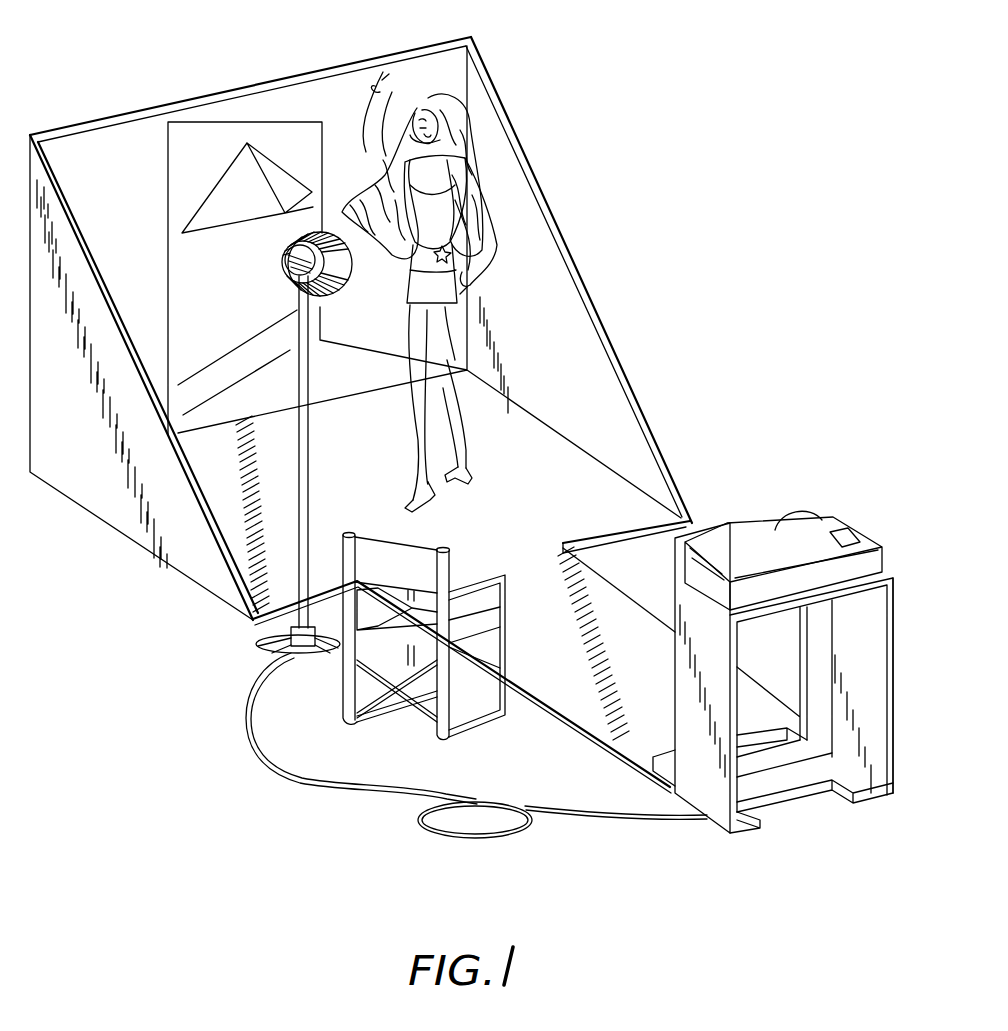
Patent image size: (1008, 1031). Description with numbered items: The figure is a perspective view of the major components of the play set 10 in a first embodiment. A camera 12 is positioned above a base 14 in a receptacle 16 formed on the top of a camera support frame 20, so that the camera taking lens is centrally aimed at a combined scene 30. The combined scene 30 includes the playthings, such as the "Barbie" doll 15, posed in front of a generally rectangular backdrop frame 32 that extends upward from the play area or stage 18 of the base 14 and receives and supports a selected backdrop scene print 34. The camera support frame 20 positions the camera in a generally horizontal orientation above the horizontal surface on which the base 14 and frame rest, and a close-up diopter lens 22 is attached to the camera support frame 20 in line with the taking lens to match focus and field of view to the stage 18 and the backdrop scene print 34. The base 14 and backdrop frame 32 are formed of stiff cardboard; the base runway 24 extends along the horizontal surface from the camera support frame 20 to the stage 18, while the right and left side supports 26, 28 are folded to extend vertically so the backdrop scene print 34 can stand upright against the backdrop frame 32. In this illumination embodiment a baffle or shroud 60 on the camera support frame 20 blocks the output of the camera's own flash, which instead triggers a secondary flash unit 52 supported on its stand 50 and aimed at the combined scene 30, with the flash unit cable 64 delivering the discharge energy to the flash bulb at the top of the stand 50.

The play set 10 is at (292, 788).
The camera 12 is at (838, 522).
The base 14 is at (541, 716).
The doll 15 is at (410, 410).
The receptacle 16 is at (890, 576).
The stage 18 is at (238, 548).
The camera support frame 20 is at (800, 811).
The close-up lens 22 is at (800, 516).
The base runway 24 is at (637, 748).
The right side support 26 is at (103, 497).
The left side support 28 is at (593, 298).
The combined scene 30 is at (593, 153).
The backdrop frame 32 is at (353, 58).
The backdrop scene print 34 is at (175, 148).
The secondary flash unit stand 50 is at (262, 649).
The secondary flash unit 52 is at (292, 262).
The baffle 60 is at (675, 555).
The flash unit cable 64 is at (561, 811).